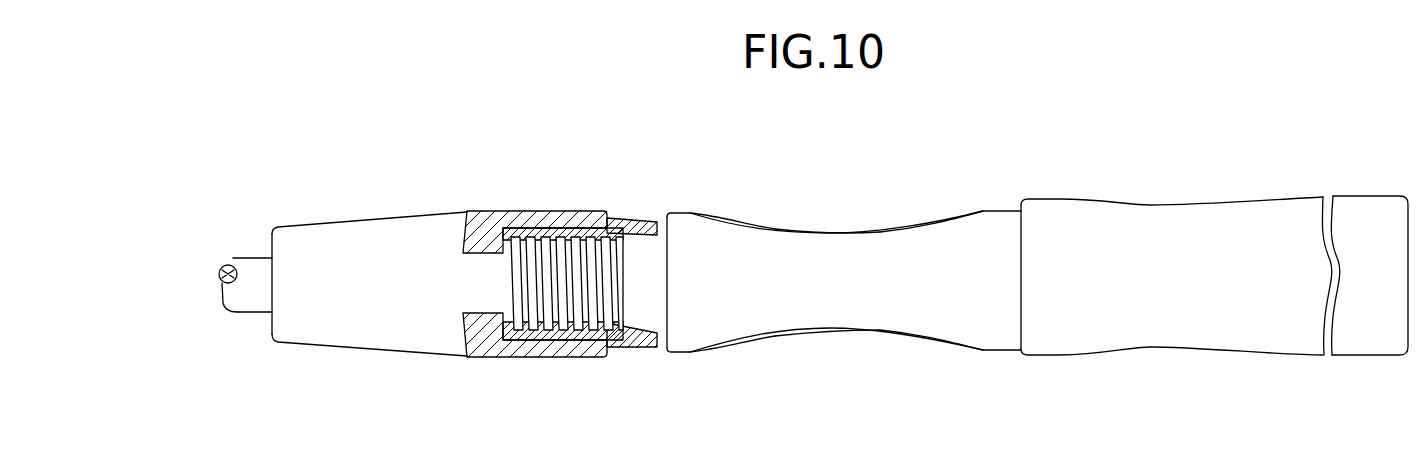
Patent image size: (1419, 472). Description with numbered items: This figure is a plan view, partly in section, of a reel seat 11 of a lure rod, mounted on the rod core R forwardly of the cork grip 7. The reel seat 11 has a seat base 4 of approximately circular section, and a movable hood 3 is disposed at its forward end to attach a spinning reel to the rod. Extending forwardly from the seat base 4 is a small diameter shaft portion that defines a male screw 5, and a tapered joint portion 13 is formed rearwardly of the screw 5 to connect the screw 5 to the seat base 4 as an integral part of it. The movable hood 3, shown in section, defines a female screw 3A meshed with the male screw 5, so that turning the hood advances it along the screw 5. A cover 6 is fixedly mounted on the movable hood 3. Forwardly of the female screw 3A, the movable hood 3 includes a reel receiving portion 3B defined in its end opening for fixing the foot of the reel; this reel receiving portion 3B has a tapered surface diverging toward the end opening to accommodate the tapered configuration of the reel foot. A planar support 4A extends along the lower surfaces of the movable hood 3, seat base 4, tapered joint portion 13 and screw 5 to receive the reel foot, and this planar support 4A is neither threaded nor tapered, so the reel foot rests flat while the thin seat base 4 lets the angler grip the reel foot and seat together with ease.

The rod core R is at (249, 267).
The movable hood 3 is at (607, 275).
The female screw 3A is at (550, 313).
The reel receiving portion 3B is at (652, 322).
The seat base 4 is at (844, 279).
The planar support 4A is at (831, 230).
The male screw 5 is at (547, 300).
The cover 6 is at (477, 218).
The cork grip 7 is at (1170, 332).
The reel seat 11 is at (862, 275).
The tapered joint portion 13 is at (651, 220).